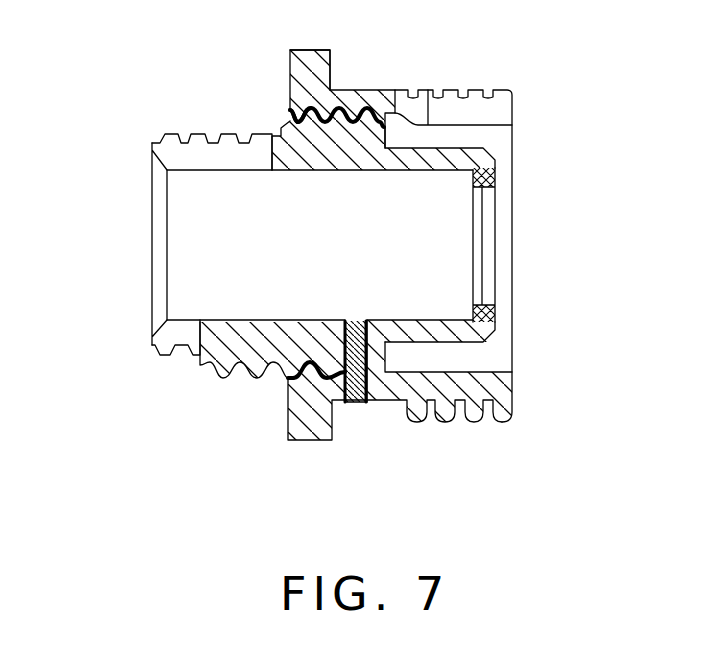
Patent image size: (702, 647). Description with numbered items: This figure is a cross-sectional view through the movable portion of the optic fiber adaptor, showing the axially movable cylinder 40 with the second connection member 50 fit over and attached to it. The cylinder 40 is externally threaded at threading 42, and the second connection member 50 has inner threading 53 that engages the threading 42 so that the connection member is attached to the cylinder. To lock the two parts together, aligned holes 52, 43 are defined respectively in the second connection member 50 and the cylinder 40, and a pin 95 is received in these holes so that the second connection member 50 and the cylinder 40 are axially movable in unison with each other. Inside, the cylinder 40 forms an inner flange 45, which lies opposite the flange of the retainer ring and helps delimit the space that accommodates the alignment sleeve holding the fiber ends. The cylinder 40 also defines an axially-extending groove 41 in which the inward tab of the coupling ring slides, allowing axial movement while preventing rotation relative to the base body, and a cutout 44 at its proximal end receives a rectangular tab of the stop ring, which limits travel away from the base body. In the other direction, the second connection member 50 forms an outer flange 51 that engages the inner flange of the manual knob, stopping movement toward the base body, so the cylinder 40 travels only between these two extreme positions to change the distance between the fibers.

The axially movable cylinder 40 is at (247, 352).
The axially-extending groove 41 is at (188, 157).
The external threading 42 is at (288, 118).
The hole 43 is at (345, 326).
The cutout 44 is at (178, 335).
The inner flange 45 is at (477, 172).
The second connection member 50 is at (360, 97).
The outer flange 51 is at (318, 62).
The hole 52 is at (380, 403).
The inner threading 53 is at (288, 110).
The pin 95 is at (361, 404).